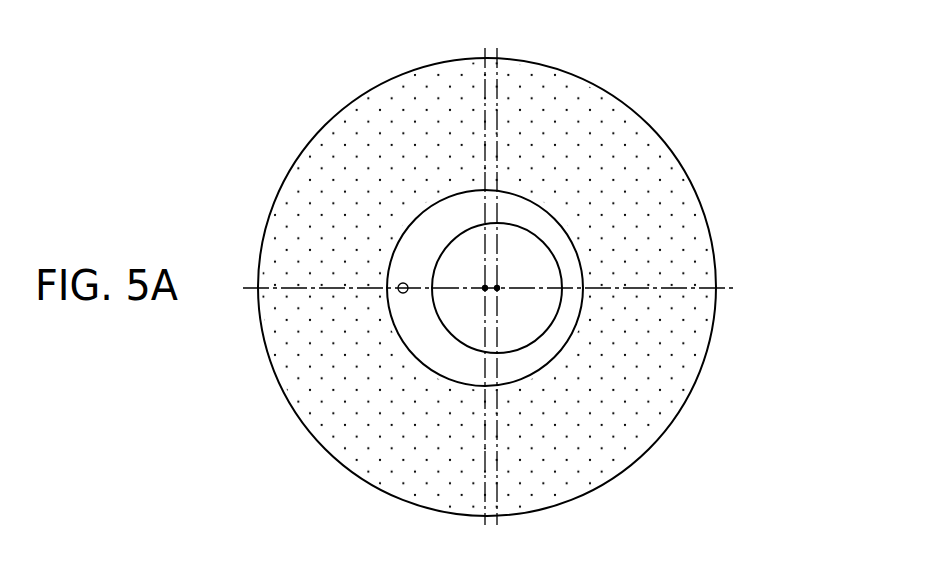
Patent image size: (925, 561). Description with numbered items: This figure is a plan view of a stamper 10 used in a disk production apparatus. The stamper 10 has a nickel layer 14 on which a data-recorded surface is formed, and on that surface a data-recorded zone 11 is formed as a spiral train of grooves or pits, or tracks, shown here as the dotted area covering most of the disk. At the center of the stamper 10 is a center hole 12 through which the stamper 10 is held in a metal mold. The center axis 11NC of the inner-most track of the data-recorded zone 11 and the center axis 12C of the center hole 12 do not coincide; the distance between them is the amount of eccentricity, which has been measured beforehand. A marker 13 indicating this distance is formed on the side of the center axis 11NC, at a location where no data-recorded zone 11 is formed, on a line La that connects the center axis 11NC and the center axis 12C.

The stamper 10 is at (706, 120).
The data-recorded zone 11 is at (700, 342).
The center axis of inner-most section 11NC is at (485, 48).
The center hole 12 is at (520, 340).
The center axis of center hole 12C is at (497, 48).
The marker 13 is at (400, 283).
The nickel layer 14 is at (567, 345).
The line La is at (718, 286).